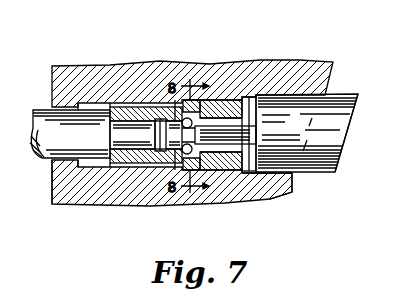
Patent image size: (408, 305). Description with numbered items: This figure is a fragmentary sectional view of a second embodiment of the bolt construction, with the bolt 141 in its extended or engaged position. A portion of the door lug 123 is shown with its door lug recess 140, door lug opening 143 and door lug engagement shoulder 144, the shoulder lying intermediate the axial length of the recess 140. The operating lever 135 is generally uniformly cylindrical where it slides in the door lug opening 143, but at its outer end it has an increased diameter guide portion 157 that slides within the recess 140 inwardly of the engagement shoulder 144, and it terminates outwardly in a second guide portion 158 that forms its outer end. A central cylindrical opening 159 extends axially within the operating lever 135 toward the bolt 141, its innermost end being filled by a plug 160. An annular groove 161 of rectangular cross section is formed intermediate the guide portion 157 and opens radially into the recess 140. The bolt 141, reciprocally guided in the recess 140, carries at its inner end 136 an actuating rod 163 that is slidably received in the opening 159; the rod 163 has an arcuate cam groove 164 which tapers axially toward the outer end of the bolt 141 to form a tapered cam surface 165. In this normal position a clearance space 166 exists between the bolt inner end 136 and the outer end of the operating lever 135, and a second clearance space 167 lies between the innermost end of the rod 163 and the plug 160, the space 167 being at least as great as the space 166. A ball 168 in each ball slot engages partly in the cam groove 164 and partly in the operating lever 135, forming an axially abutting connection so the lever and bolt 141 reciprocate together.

The door lug 123 is at (118, 75).
The operating lever 135 is at (53, 154).
The bolt inner end 136 is at (264, 96).
The door lug recess 140 is at (100, 164).
The bolt 141 is at (327, 153).
The door lug opening 143 is at (55, 203).
The door lug engagement shoulder 144 is at (167, 98).
The guide portion 157 is at (150, 170).
The second guide portion 158 is at (228, 100).
The operating lever opening 159 is at (240, 105).
The plug 160 is at (122, 127).
The annular groove 161 is at (198, 142).
The actuating rod 163 is at (255, 130).
The cam groove 164 is at (173, 160).
The tapered cam surface 165 is at (217, 140).
The clearance space 166 is at (270, 206).
The clearance space 167 is at (133, 165).
The ball 168 is at (203, 100).